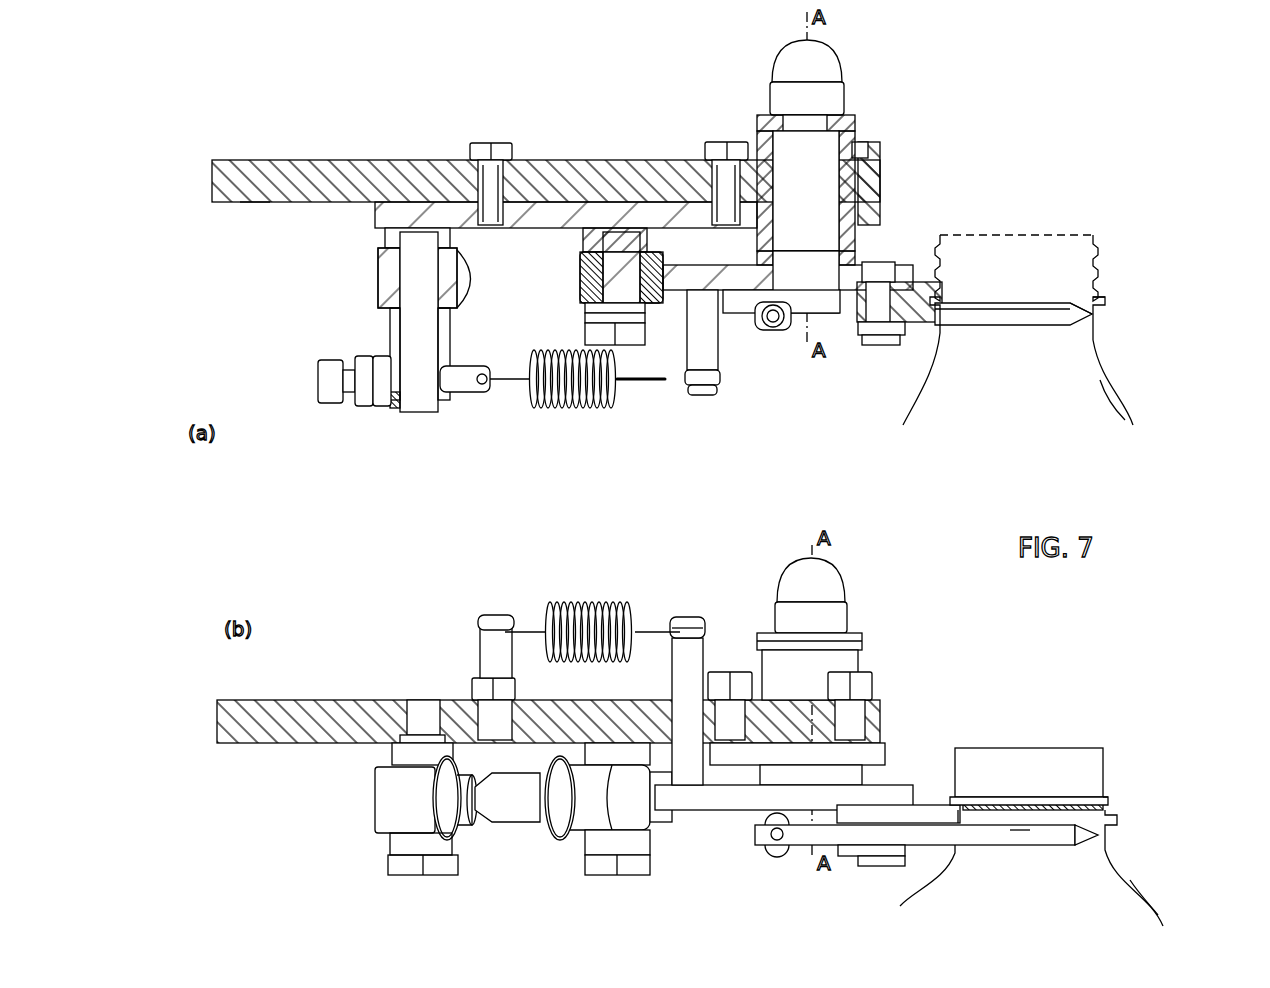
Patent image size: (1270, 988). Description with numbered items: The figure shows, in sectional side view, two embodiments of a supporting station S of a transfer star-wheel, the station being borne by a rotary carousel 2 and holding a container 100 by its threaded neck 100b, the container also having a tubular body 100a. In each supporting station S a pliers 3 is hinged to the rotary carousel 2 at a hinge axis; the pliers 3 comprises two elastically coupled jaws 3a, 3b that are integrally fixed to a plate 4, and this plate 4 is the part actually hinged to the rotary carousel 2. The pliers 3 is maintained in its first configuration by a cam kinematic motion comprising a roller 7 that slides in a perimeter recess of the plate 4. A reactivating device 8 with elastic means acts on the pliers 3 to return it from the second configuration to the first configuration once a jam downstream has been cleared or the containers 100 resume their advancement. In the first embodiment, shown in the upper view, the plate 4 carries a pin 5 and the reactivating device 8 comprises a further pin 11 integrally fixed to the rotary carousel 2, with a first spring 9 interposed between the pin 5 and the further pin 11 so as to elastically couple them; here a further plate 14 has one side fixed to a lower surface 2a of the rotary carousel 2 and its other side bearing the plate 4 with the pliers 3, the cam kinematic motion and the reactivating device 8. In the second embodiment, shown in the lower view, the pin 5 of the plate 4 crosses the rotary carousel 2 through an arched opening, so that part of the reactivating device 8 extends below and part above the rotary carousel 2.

The rotary carousel 2 is at (226, 180).
The lower surface 2a is at (253, 203).
The pliers 3 is at (962, 298).
The jaw 3a is at (957, 323).
The jaw 3b is at (1020, 822).
The plate 4 is at (733, 297).
The pin 5 is at (696, 387).
The roller 7 is at (579, 280).
The reactivating device 8 is at (549, 450).
The first spring 9 is at (572, 410).
The further pin 11 is at (402, 406).
The further plate 14 is at (378, 222).
The container 100 is at (1098, 230).
The tubular body 100a is at (1105, 398).
The threaded neck 100b is at (1086, 283).
The supporting station S is at (995, 146).